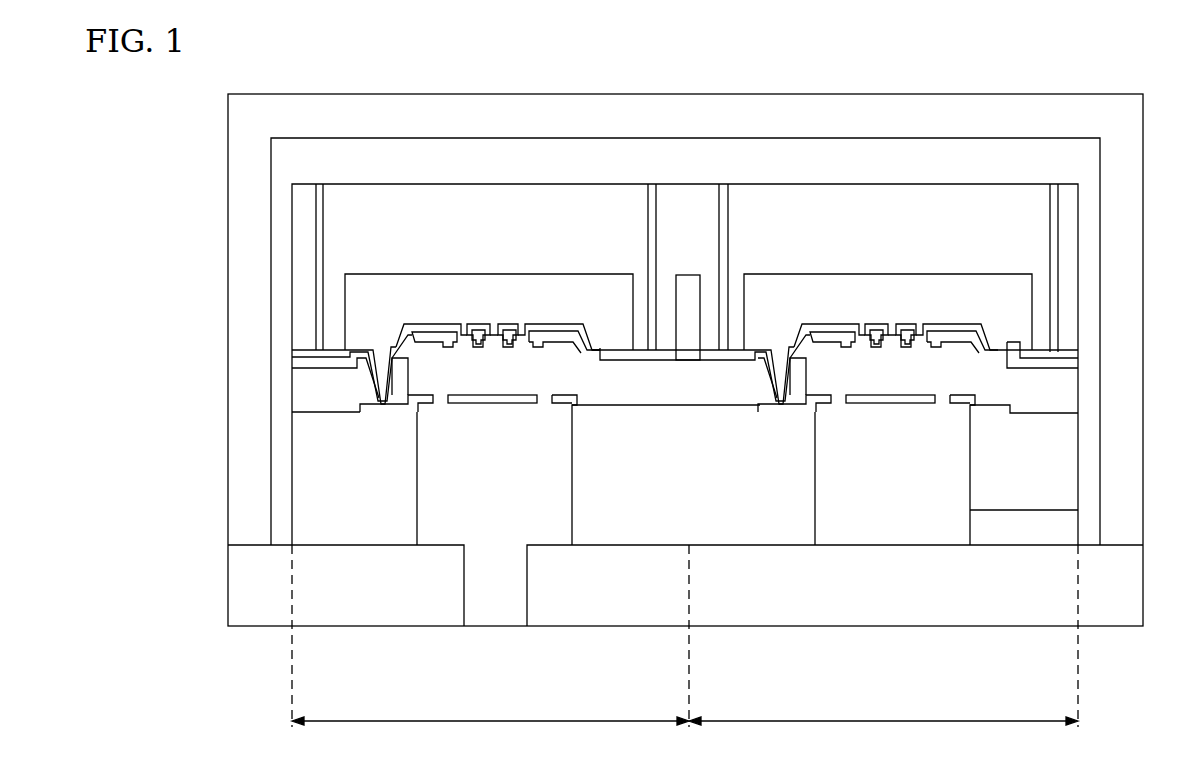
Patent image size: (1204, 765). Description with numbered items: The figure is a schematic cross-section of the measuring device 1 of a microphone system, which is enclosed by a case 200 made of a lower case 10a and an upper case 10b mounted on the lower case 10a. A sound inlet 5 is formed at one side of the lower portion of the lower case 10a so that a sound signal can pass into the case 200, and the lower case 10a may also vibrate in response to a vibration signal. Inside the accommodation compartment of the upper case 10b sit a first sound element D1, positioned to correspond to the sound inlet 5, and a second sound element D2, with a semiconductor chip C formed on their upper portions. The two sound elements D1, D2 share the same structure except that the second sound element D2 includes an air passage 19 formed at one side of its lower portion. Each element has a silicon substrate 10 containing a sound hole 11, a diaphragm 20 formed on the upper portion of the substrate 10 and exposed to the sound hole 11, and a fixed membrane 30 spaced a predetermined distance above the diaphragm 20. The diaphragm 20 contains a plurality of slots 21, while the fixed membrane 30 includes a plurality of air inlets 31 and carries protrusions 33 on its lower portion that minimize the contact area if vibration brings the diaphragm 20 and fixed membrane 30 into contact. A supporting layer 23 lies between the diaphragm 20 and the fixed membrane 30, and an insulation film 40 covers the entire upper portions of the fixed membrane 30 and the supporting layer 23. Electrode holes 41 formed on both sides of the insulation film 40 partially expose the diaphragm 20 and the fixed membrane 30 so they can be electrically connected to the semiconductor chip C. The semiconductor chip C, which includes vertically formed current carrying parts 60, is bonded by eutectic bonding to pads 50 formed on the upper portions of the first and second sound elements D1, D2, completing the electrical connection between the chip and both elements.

The measuring device 1 is at (805, 52).
The sound inlet 5 is at (492, 608).
The substrate 10 is at (303, 457).
The lower case 10a is at (238, 583).
The upper case 10b is at (238, 528).
The sound hole 11 is at (487, 502).
The air passage 19 is at (1000, 529).
The diaphragm 20 is at (365, 417).
The slots 21 is at (442, 398).
The supporting layer 23 is at (305, 390).
The fixed membrane 30 is at (430, 336).
The air inlets 31 is at (464, 330).
The protrusions 33 is at (507, 343).
The insulation film 40 is at (302, 364).
The electrode holes 41 is at (382, 349).
The pads 50 is at (1070, 353).
The current carrying parts 60 is at (1055, 261).
The case 200 is at (150, 525).
The semiconductor chip C is at (560, 202).
The first sound element D1 is at (490, 636).
The second sound element D2 is at (883, 636).